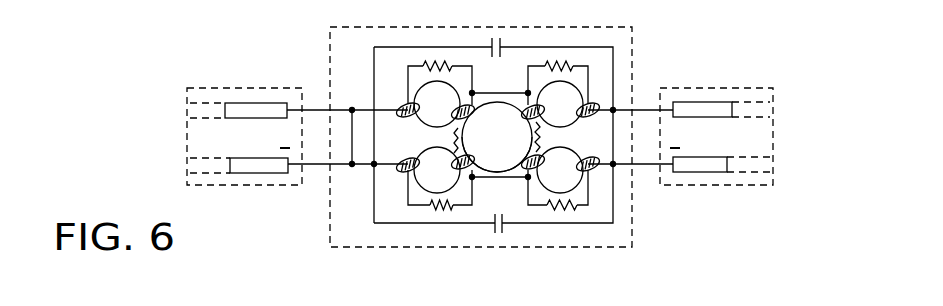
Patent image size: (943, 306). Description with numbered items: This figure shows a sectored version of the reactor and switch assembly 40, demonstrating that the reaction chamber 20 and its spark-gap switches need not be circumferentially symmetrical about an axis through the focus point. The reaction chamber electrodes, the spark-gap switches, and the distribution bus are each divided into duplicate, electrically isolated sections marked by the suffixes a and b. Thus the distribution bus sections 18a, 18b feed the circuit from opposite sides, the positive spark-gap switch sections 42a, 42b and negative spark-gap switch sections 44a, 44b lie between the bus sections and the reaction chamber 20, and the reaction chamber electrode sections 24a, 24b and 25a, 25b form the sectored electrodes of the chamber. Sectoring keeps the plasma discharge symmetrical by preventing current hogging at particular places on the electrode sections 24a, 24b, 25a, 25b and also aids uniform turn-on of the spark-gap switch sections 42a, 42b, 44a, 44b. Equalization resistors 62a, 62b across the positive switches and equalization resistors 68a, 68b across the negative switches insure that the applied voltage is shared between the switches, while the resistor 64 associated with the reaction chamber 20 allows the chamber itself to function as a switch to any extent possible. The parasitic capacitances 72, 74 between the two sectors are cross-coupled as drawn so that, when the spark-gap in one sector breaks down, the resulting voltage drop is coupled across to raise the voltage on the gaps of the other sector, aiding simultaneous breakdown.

The distribution bus section 18a is at (234, 87).
The distribution bus section 18b is at (729, 87).
The reaction chamber 20 is at (516, 91).
The reaction chamber electrode section 24a is at (446, 127).
The reaction chamber electrode section 24b is at (517, 125).
The reaction chamber electrode section 25a is at (430, 157).
The reaction chamber electrode section 25b is at (517, 146).
The reactor and switch assembly 40 is at (327, 228).
The positive spark-gap switch section 42a is at (400, 104).
The positive spark-gap switch section 42b is at (585, 101).
The negative spark-gap switch section 44a is at (405, 172).
The negative spark-gap switch section 44b is at (587, 158).
The equalization resistor 62a is at (430, 62).
The equalization resistor 62b is at (548, 61).
The equalization resistor 64 is at (538, 136).
The equalization resistor 68a is at (431, 206).
The equalization resistor 68b is at (548, 208).
The parasitic capacitance 72 is at (491, 46).
The parasitic capacitance 74 is at (494, 215).